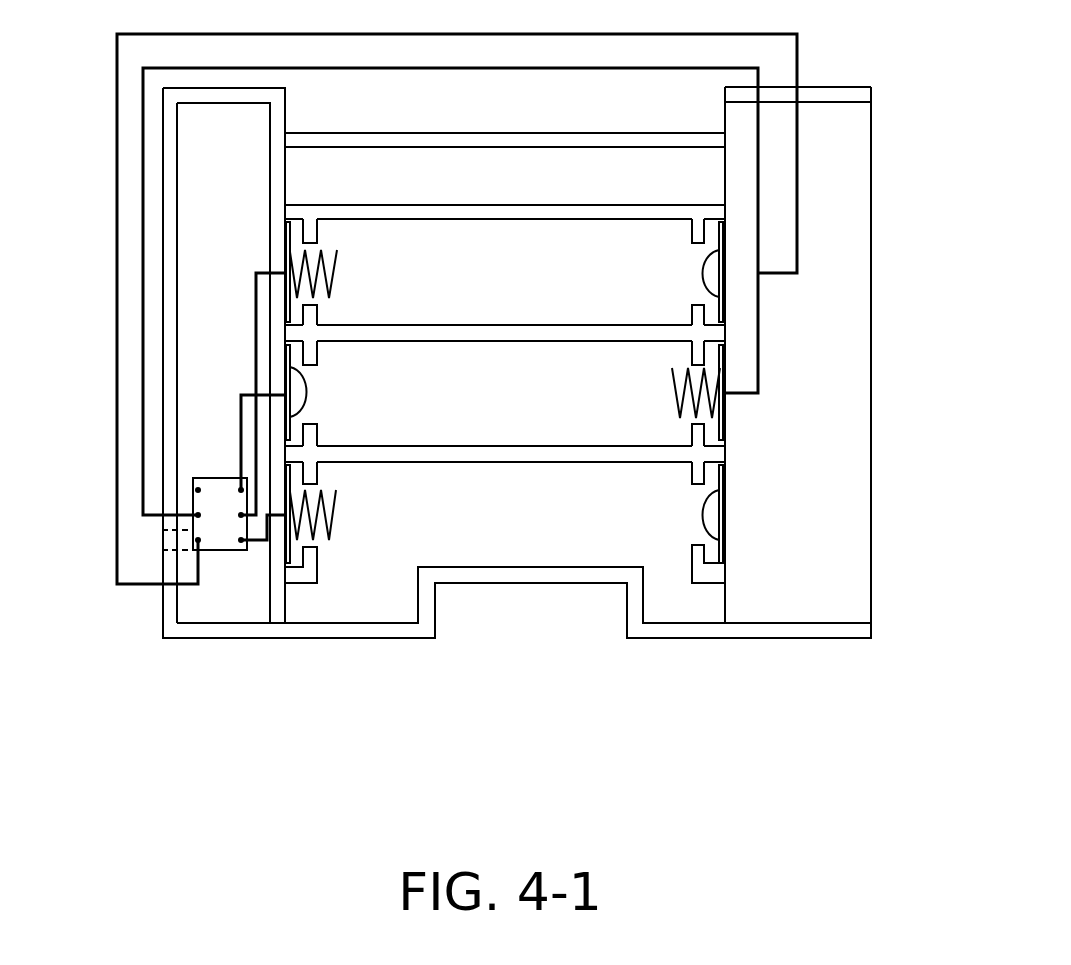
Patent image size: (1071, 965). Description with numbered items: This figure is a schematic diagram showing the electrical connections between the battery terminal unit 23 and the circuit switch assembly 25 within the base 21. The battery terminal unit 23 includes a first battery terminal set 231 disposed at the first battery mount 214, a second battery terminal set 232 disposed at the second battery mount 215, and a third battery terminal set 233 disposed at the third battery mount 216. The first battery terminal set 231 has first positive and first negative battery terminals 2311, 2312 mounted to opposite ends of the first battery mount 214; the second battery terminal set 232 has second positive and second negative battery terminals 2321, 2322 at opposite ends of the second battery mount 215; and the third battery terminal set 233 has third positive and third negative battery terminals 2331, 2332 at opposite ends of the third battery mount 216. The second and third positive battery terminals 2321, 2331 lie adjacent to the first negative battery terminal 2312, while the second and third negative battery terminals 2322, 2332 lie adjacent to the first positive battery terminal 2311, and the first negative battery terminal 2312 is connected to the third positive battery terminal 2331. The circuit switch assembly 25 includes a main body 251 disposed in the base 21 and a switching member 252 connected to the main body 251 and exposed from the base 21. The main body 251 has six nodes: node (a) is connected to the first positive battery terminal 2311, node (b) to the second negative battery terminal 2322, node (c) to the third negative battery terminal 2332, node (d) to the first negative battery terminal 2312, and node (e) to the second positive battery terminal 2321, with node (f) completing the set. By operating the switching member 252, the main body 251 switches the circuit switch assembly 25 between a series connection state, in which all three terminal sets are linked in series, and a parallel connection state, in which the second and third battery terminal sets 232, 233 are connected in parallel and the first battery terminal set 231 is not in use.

The base 21 is at (343, 640).
The first battery mount 214 is at (513, 435).
The second battery mount 215 is at (533, 253).
The third battery mount 216 is at (535, 557).
The battery terminal unit 23 is at (752, 465).
The first battery terminal set 231 is at (752, 423).
The second battery terminal set 232 is at (750, 291).
The third battery terminal set 233 is at (750, 513).
The first positive battery terminal 2311 is at (305, 393).
The first negative battery terminal 2312 is at (672, 393).
The second positive battery terminal 2321 is at (705, 268).
The second negative battery terminal 2322 is at (337, 270).
The third positive battery terminal 2331 is at (705, 518).
The third negative battery terminal 2332 is at (337, 527).
The circuit switch assembly 25 is at (218, 455).
The main body 251 is at (222, 555).
The switching member 252 is at (183, 545).